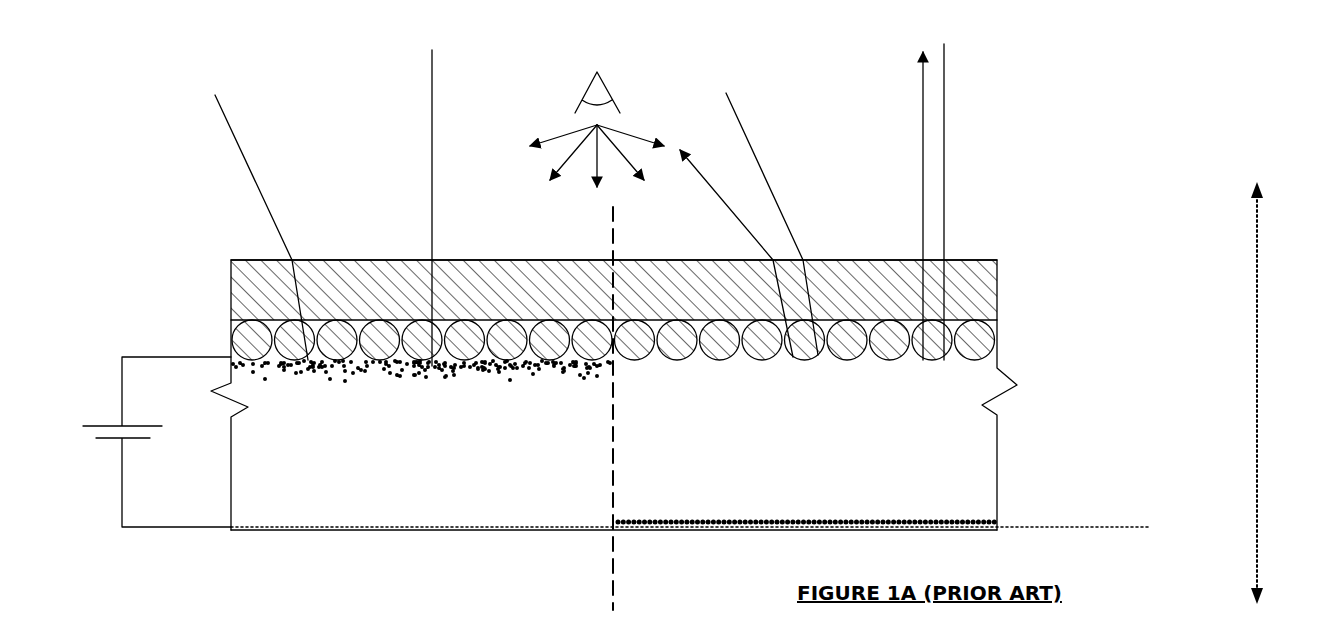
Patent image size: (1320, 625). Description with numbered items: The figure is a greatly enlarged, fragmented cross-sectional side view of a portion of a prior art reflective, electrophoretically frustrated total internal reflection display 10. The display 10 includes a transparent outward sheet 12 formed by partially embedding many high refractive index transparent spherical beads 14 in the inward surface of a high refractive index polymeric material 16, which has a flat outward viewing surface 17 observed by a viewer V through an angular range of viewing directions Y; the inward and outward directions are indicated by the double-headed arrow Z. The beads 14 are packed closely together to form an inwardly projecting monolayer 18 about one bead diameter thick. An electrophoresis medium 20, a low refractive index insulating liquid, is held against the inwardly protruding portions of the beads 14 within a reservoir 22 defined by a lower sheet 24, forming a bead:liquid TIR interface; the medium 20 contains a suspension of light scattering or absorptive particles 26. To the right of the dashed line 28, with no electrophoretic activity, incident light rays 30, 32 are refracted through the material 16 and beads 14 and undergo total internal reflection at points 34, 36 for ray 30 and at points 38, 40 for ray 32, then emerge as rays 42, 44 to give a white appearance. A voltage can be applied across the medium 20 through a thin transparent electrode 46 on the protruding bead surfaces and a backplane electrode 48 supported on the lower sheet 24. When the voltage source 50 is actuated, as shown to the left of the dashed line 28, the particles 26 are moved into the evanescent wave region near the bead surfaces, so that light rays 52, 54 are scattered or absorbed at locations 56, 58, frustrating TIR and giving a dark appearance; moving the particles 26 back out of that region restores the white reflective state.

The display 10 is at (705, 392).
The transparent outward sheet 12 is at (662, 277).
The beads 14 is at (243, 322).
The polymeric material 16 is at (556, 275).
The outward viewing surface 17 is at (392, 260).
The monolayer 18 is at (616, 286).
The electrophoresis medium 20 is at (614, 425).
The reservoir 22 is at (726, 458).
The lower sheet 24 is at (340, 531).
The particles 26 is at (332, 377).
The dashed line 28 is at (606, 570).
The incident light ray 30 is at (944, 78).
The incident light ray 32 is at (747, 130).
The TIR point 34 is at (947, 363).
The TIR point 36 is at (910, 363).
The TIR point 38 is at (830, 363).
The TIR point 40 is at (790, 362).
The emerging ray 42 is at (923, 170).
The emerging ray 44 is at (706, 184).
The electrode 46 is at (242, 352).
The backplane electrode 48 is at (338, 527).
The voltage source 50 is at (97, 425).
The light ray 52 is at (432, 105).
The light ray 54 is at (237, 145).
The scattering/absorption point 56 is at (412, 367).
The scattering/absorption point 58 is at (287, 364).
The viewer V is at (600, 90).
The viewing directions Y is at (620, 130).
The double-headed arrow Z is at (1257, 260).